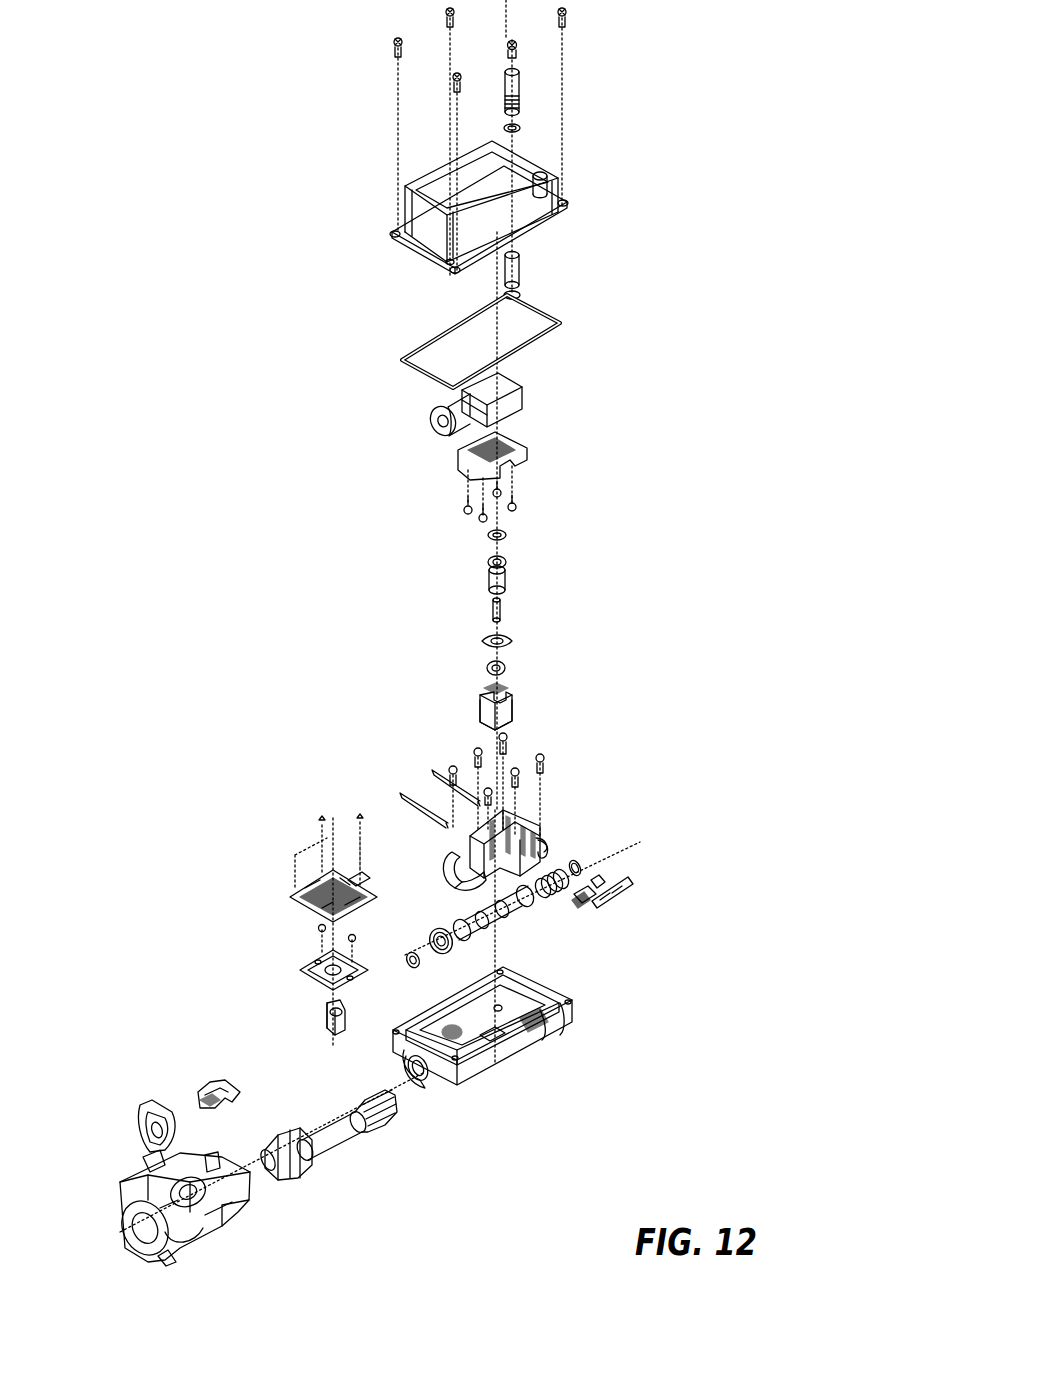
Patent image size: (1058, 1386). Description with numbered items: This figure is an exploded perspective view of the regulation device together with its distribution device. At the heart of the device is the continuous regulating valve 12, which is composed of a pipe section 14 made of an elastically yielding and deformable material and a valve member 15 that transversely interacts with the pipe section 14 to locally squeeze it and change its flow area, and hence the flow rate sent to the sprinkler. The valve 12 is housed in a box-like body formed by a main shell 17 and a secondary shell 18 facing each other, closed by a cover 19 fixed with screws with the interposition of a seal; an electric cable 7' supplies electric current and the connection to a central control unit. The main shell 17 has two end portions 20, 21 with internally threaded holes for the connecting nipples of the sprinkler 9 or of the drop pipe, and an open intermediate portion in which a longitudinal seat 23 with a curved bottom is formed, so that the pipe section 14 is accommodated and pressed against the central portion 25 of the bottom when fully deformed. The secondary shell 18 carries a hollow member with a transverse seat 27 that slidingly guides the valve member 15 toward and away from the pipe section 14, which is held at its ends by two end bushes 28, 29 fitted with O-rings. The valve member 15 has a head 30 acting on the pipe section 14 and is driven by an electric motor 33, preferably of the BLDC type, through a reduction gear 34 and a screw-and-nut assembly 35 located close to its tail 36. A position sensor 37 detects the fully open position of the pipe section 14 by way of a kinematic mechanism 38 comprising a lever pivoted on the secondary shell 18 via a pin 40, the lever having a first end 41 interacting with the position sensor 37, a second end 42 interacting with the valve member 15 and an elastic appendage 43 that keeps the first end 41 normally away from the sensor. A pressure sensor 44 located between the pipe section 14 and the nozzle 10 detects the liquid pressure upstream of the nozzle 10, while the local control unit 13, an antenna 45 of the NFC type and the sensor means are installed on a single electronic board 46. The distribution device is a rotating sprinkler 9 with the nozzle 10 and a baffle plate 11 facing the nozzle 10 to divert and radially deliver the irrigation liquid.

The electric cable 7' is at (578, 81).
The cover 19 is at (420, 228).
The electric motor 33 is at (437, 415).
The reduction gear 34 is at (510, 403).
The screw-and-nut assembly 35 is at (508, 638).
The tail 36 is at (490, 688).
The valve member 15 is at (514, 703).
The head 30 is at (490, 713).
The pin 40 is at (405, 795).
The transverse seat 27 is at (508, 817).
The secondary shell 18 is at (542, 843).
The end bush 29 is at (565, 868).
The second end 42 is at (600, 886).
The elastic appendage 43 is at (600, 893).
The kinematic mechanism 38 is at (622, 894).
The first end 41 is at (576, 906).
The end bush 28 is at (438, 932).
The pipe section 14 is at (497, 918).
The antenna 45 is at (327, 862).
The position sensor 37 is at (365, 888).
The local control unit 13 is at (300, 905).
The electronic board 46 is at (318, 905).
The pressure sensor 44 is at (335, 1018).
The main shell 17 is at (570, 1022).
The end portion 21 is at (545, 988).
The central portion 25 is at (515, 1040).
The longitudinal seat 23 is at (486, 1042).
The end portion 20 is at (423, 1090).
The nozzle 10 is at (212, 1085).
The baffle plate 11 is at (148, 1110).
The rotating sprinkler 9 is at (212, 1238).
The continuous regulating valve 12 is at (807, 648).